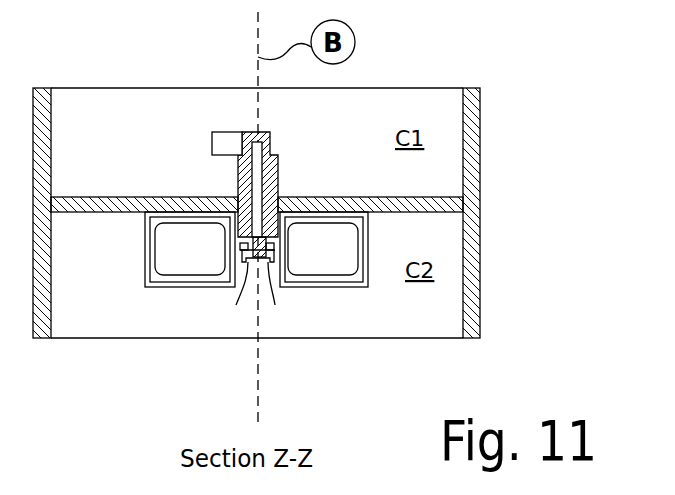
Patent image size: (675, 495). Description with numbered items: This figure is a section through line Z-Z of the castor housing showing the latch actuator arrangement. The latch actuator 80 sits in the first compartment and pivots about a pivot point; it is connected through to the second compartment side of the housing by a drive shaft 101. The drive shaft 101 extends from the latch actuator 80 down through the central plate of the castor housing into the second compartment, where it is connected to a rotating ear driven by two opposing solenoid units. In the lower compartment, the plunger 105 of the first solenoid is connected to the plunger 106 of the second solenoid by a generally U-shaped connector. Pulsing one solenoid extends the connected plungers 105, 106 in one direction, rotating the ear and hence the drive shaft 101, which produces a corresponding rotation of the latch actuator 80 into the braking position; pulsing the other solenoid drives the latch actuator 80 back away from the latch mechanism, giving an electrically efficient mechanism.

The latch actuator 80 is at (220, 143).
The drive shaft 101 is at (262, 170).
The plunger of the first solenoid 105 is at (236, 305).
The plunger of the second solenoid 106 is at (275, 305).